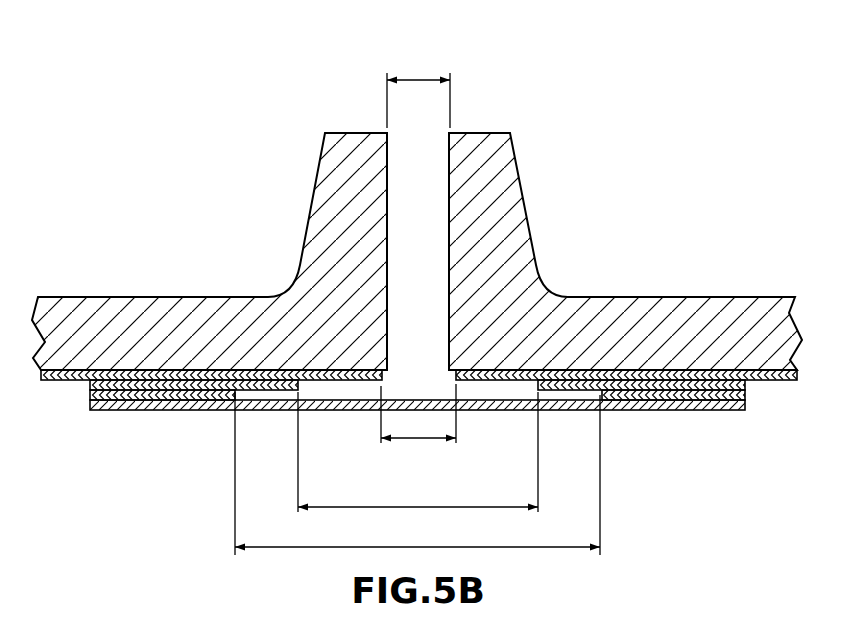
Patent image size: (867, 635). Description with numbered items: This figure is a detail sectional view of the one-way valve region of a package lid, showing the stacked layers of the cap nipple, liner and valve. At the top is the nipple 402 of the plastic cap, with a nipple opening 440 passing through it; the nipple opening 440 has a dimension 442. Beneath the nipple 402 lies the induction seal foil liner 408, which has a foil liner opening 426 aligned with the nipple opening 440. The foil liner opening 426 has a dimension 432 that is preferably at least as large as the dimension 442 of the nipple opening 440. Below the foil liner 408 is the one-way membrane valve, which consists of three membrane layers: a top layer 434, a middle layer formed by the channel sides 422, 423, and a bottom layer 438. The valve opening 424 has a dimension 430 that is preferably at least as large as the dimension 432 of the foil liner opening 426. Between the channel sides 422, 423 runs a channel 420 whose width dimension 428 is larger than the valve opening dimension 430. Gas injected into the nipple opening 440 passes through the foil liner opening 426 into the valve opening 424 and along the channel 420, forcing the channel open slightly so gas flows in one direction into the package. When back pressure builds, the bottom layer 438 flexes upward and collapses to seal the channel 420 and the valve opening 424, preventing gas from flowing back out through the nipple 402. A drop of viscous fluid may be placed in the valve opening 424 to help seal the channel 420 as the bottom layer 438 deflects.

The nipple 402 is at (520, 182).
The foil liner 408 is at (57, 382).
The channel 420 is at (565, 393).
The channel side 422 is at (745, 395).
The channel side 423 is at (90, 395).
The membrane valve opening 424 is at (500, 382).
The foil liner opening 426 is at (419, 378).
The channel width dimension 428 is at (572, 545).
The valve opening dimension 430 is at (490, 505).
The foil liner opening dimension 432 is at (418, 440).
The top membrane layer 434 is at (745, 384).
The bottom membrane layer 438 is at (668, 410).
The nipple opening 440 is at (420, 168).
The nipple opening dimension 442 is at (420, 78).